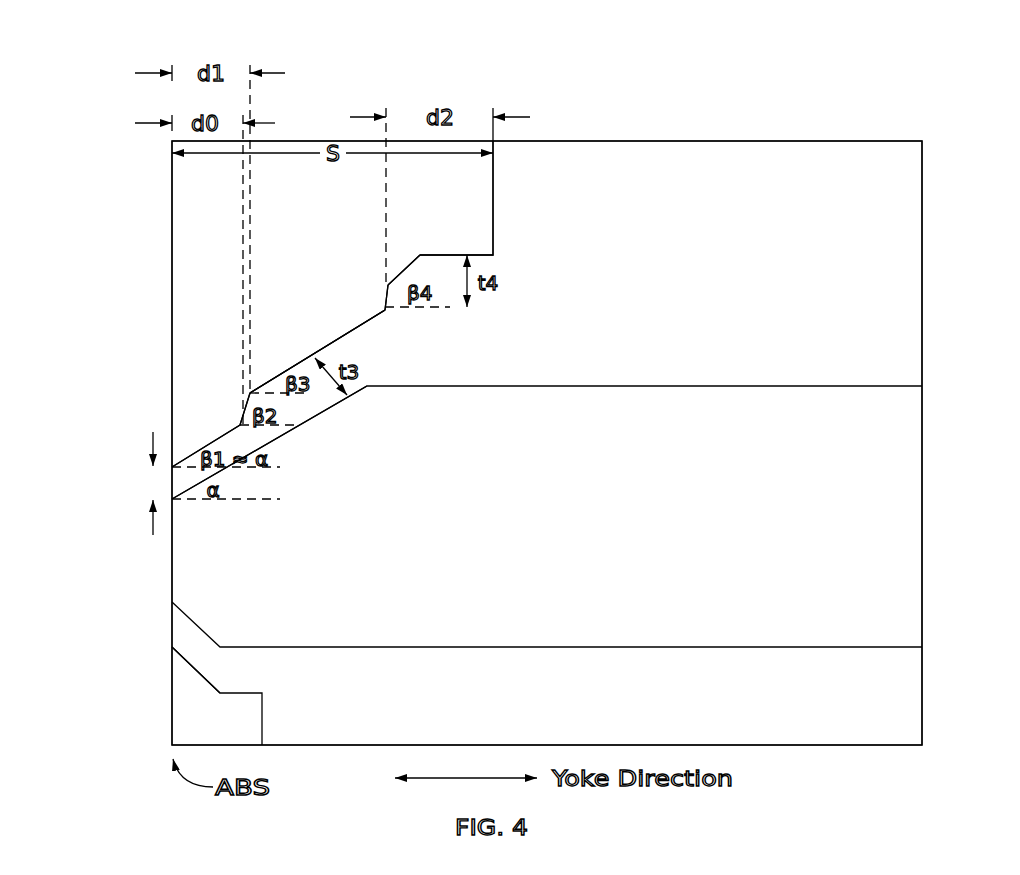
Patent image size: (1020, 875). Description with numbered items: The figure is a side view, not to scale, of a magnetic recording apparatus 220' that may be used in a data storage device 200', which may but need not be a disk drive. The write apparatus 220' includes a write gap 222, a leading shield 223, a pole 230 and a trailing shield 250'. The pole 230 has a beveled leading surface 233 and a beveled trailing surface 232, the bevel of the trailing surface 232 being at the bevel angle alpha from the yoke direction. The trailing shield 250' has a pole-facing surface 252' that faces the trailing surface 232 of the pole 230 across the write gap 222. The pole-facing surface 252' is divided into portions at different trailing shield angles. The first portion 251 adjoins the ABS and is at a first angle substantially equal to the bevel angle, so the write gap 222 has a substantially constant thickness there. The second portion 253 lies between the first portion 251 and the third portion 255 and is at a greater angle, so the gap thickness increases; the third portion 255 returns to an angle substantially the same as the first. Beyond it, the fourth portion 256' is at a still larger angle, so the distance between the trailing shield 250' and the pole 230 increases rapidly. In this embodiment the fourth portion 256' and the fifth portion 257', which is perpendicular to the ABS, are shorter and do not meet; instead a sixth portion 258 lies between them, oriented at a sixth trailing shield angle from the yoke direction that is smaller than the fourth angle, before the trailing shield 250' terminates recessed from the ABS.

The data storage device 200' is at (547, 387).
The magnetic recording apparatus 220' is at (547, 387).
The pole 230 is at (547, 516).
The write gap 222 is at (132, 478).
The leading shield 223 is at (217, 696).
The trailing surface 232 is at (208, 507).
The beveled leading surface 233 is at (189, 626).
The trailing shield 250' is at (332, 304).
The first portion of the pole-facing surface 251 is at (196, 434).
The second portion of the pole-facing surface 253 is at (236, 407).
The pole-facing surface 252' is at (230, 351).
The third portion of the pole-facing surface 255 is at (302, 339).
The fourth portion of the pole-facing surface 256' is at (250, 252).
The sixth portion of the pole-facing surface 258 is at (401, 259).
The fifth portion of the pole-facing surface 257' is at (556, 184).